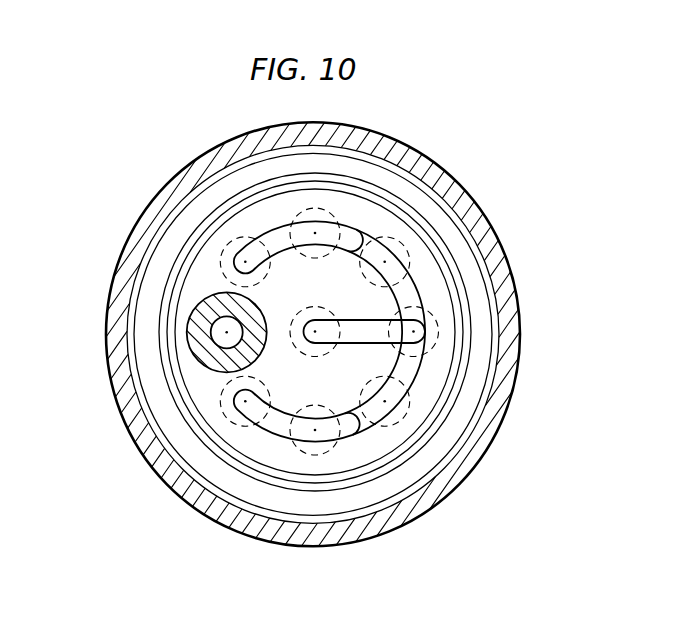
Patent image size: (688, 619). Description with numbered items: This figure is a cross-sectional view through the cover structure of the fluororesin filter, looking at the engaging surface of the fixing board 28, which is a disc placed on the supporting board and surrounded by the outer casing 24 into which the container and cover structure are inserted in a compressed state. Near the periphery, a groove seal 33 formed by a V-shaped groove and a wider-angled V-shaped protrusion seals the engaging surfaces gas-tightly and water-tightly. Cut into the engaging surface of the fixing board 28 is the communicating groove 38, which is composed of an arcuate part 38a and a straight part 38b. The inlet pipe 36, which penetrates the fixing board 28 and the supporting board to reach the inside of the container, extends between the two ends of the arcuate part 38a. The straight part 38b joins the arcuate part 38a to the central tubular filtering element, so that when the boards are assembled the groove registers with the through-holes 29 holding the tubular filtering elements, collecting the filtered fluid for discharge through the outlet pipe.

The outer casing 24 is at (140, 218).
The fixing board 28 is at (268, 498).
The through-holes 29 is at (292, 215).
The groove seal 33 is at (478, 357).
The inlet pipe 36 is at (198, 343).
The communicating groove 38 is at (426, 292).
The arcuate part 38a is at (353, 240).
The straight part 38b is at (357, 342).